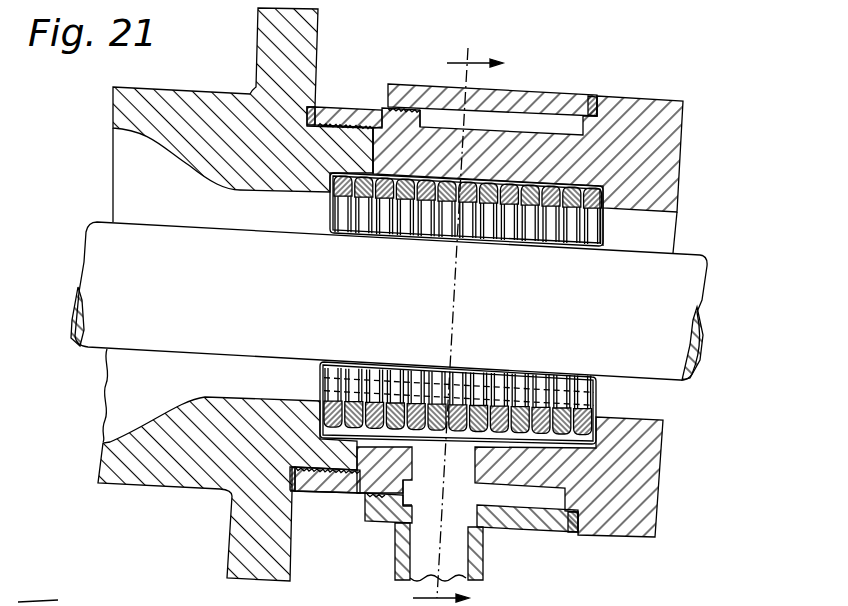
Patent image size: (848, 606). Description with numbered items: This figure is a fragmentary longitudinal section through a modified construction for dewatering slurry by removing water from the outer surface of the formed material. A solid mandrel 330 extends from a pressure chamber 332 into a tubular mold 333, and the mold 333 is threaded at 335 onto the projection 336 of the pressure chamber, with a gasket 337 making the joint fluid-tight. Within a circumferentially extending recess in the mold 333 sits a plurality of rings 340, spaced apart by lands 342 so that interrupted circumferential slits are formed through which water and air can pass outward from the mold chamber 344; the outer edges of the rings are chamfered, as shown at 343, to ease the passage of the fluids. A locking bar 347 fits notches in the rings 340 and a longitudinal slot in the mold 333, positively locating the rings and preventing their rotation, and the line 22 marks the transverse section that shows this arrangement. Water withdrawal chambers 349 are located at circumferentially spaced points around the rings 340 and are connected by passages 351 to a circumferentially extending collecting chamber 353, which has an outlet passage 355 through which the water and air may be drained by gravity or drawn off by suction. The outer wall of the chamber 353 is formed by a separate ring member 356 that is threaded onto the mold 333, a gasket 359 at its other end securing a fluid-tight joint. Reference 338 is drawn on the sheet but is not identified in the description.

The section line 22 is at (466, 319).
The solid mandrel 330 is at (118, 320).
The pressure chamber 332 is at (143, 178).
The tubular mold 333 is at (672, 112).
The threaded connection 335 is at (342, 147).
The projection of the pressure chamber 336 is at (365, 147).
The gasket 337 is at (292, 481).
The seal cage 338 is at (407, 173).
The rings 340 is at (600, 197).
The lands 342 is at (523, 233).
The chamfer 343 is at (600, 447).
The mold chamber 344 is at (655, 225).
The locking bar 347 is at (562, 389).
The water withdrawal chambers 349 is at (557, 443).
The passages 351 is at (432, 462).
The collecting chamber 353 is at (547, 502).
The outlet passage 355 is at (483, 563).
The ring member 356 is at (532, 98).
The gasket 359 is at (593, 98).